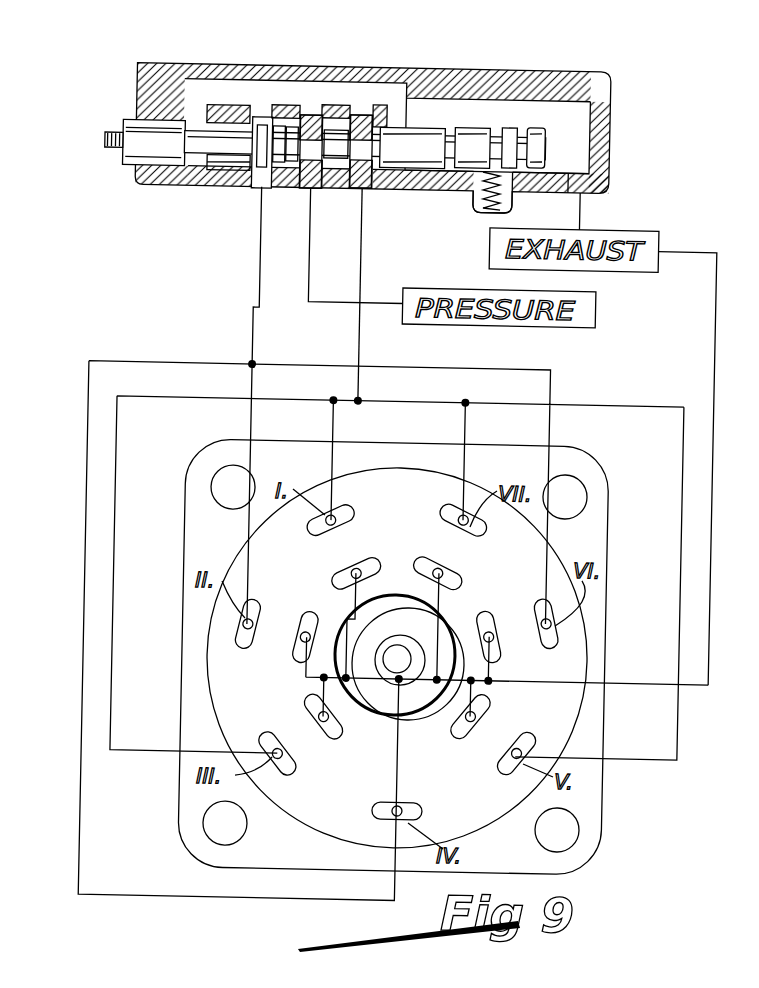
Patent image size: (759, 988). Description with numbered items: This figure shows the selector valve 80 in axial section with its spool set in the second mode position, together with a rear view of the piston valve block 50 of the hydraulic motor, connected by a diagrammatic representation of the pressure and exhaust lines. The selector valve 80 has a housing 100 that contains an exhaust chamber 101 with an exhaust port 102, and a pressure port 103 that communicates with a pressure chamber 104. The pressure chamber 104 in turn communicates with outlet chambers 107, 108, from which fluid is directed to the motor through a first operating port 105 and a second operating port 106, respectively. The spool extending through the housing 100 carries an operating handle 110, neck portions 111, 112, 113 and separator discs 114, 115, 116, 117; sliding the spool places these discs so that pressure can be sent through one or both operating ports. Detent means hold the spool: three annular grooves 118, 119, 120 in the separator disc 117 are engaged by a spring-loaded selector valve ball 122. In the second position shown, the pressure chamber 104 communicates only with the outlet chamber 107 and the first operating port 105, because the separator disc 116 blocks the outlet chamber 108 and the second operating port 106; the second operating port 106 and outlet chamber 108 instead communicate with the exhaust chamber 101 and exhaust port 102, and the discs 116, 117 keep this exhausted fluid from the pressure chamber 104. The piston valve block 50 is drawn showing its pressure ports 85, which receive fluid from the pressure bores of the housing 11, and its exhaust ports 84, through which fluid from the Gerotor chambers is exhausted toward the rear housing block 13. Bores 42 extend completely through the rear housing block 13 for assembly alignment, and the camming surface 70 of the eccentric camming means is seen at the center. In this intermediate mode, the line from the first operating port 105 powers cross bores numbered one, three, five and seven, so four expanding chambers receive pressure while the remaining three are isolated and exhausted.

The selector valve 80 is at (605, 82).
The housing 100 is at (589, 49).
The exhaust chamber 101 is at (572, 116).
The exhaust port 102 is at (576, 188).
The pressure port 103 is at (299, 194).
The pressure chamber 104 is at (330, 96).
The first operating port 105 is at (359, 191).
The second operating port 106 is at (251, 195).
The outlet chamber 107 is at (356, 119).
The outlet chamber 108 is at (254, 108).
The operating handle 110 is at (112, 138).
The neck portion 111 is at (205, 176).
The neck portion 112 is at (270, 138).
The neck portion 113 is at (326, 137).
The separator disc 114 is at (125, 173).
The separator disc 115 is at (249, 173).
The separator disc 116 is at (283, 130).
The separator disc 117 is at (400, 110).
The annular groove 118 is at (444, 129).
The annular groove 119 is at (487, 128).
The annular groove 120 is at (515, 126).
The selector valve ball 122 is at (471, 188).
The housing 11 is at (601, 456).
The rear housing block 13 is at (531, 476).
The bores 42 is at (215, 482).
The piston valve block 50 is at (410, 504).
The camming surface 70 is at (400, 594).
The exhaust ports 84 is at (322, 595).
The pressure ports 85 is at (313, 555).